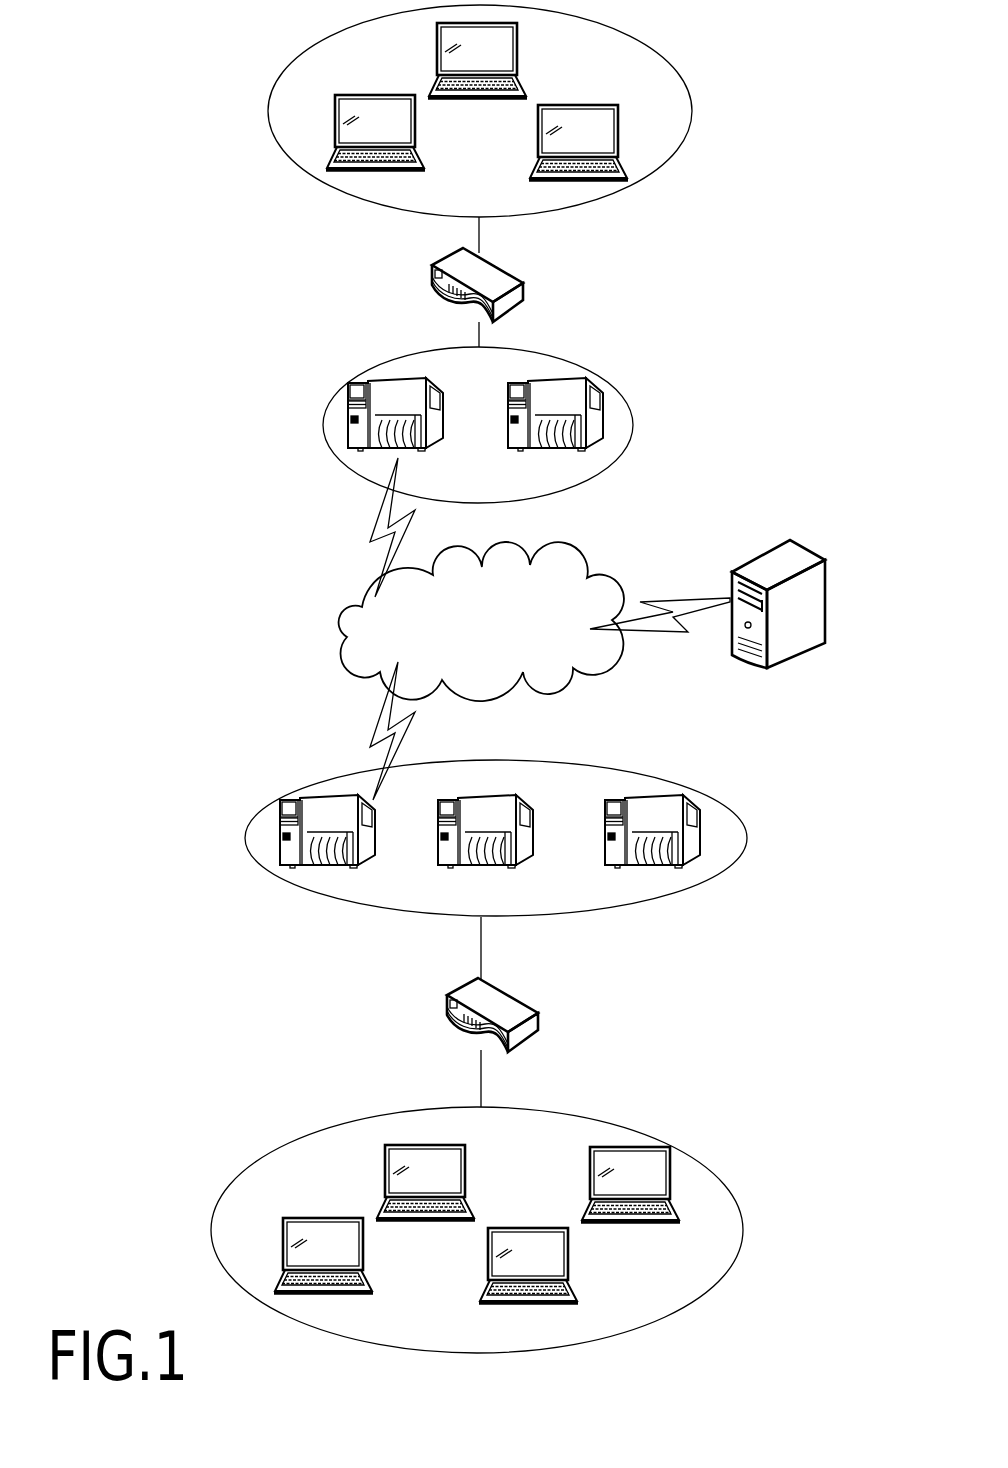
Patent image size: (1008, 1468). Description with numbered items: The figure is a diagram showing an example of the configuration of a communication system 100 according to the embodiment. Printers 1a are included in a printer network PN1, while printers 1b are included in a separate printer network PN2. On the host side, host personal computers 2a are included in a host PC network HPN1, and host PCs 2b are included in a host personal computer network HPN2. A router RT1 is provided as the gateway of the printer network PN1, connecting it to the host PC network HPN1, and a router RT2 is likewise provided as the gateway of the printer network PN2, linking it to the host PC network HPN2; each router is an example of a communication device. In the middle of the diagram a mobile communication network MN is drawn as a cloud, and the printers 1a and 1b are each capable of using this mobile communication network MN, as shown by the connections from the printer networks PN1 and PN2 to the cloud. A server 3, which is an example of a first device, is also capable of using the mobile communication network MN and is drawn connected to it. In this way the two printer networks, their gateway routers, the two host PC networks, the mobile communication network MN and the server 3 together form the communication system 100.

The communication system 100 is at (227, 619).
The host personal computer network HPN2 is at (512, 111).
The host PC 2b is at (335, 130).
The router RT2 is at (523, 283).
The printer network PN2 is at (483, 425).
The printer 1b is at (348, 420).
The mobile communication network MN is at (343, 638).
The server 3 is at (827, 595).
The printer network PN1 is at (523, 838).
The printer 1a is at (300, 863).
The router RT1 is at (540, 1013).
The host PC network HPN1 is at (524, 1230).
The host PC 2a is at (287, 1295).